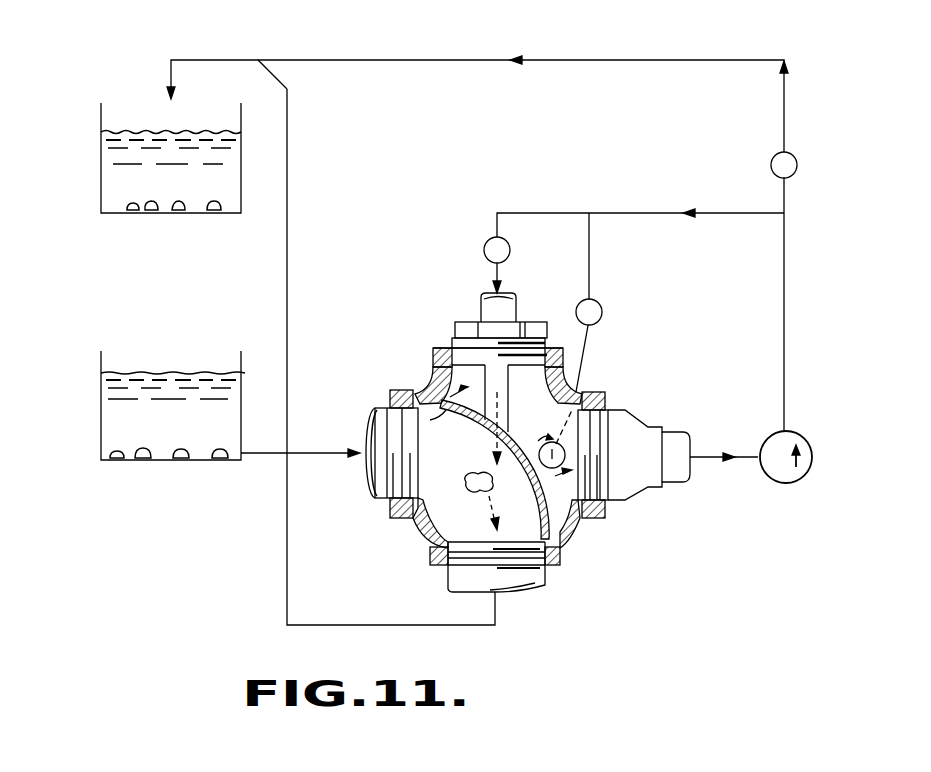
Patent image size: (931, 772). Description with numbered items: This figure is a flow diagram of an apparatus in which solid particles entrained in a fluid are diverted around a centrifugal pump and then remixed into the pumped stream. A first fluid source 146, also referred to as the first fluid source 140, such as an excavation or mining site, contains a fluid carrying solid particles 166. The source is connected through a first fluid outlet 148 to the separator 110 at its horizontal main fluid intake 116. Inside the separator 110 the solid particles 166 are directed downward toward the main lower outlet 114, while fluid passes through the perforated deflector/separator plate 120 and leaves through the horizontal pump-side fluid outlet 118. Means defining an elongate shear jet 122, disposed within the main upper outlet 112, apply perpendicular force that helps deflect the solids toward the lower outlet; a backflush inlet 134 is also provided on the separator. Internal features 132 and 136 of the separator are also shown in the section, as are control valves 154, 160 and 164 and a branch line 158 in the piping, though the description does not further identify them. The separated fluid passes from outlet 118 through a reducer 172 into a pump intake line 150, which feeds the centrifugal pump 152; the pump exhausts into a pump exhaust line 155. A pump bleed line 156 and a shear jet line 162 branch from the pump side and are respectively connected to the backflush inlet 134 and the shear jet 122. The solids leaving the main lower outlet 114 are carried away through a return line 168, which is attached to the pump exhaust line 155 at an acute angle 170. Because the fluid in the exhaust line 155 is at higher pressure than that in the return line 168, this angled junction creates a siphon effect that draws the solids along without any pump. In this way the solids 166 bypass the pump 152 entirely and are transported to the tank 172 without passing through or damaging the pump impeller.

The separator 110 is at (617, 346).
The main upper outlet 112 is at (527, 373).
The main lower outlet 114 is at (512, 562).
The horizontal main fluid intake 116 is at (398, 466).
The horizontal pump-side fluid outlet 118 is at (600, 470).
The perforated deflector/separator plate 120 is at (476, 420).
The means defining an elongate shear jet 122 is at (488, 378).
The inlet passage 132 is at (450, 455).
The backflush inlet 134 is at (600, 400).
The valve seat 136 is at (522, 440).
The first fluid source 140 is at (100, 85).
The first fluid source 146 is at (182, 433).
The first fluid outlet 148 is at (262, 458).
The pump intake line 150 is at (714, 455).
The centrifugal pump 152 is at (807, 433).
The control valve 154 is at (798, 164).
The pump exhaust line 155 is at (713, 58).
The pump bleed line 156 is at (718, 211).
The branch line 158 is at (590, 240).
The control valve 160 is at (606, 300).
The shear jet line 162 is at (553, 212).
The control valve 164 is at (512, 247).
The solid particles 166 is at (476, 501).
The return line 168 is at (287, 168).
The acute angle 170 is at (263, 54).
The reducer 172 is at (101, 190).